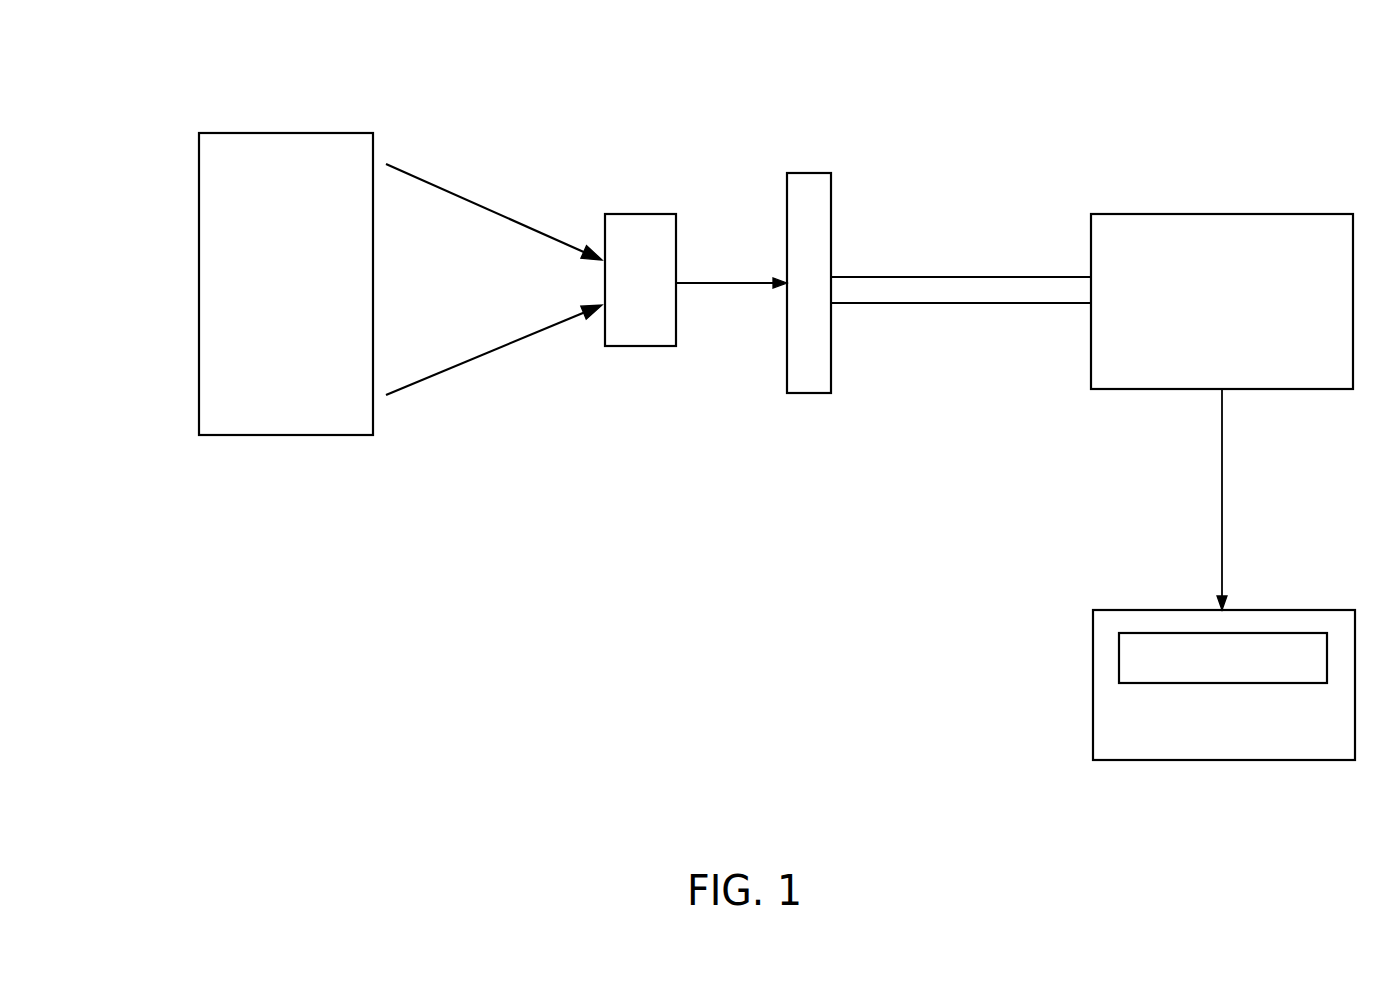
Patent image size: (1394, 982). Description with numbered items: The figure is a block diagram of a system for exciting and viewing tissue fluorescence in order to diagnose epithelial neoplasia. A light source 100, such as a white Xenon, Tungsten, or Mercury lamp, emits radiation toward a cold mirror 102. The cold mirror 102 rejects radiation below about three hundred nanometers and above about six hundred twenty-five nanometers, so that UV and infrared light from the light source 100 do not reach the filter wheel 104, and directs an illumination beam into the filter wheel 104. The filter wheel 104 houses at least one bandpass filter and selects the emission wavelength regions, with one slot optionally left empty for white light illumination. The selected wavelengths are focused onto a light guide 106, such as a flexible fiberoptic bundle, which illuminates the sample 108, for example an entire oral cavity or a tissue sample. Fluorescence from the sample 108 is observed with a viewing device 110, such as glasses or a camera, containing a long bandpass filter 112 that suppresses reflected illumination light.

The light source 100 is at (184, 122).
The cold mirror 102 is at (632, 207).
The filter wheel 104 is at (778, 206).
The light guide 106 is at (974, 273).
The sample 108 is at (1229, 203).
The viewing device 110 is at (1087, 645).
The long bandpass filter 112 is at (1199, 671).